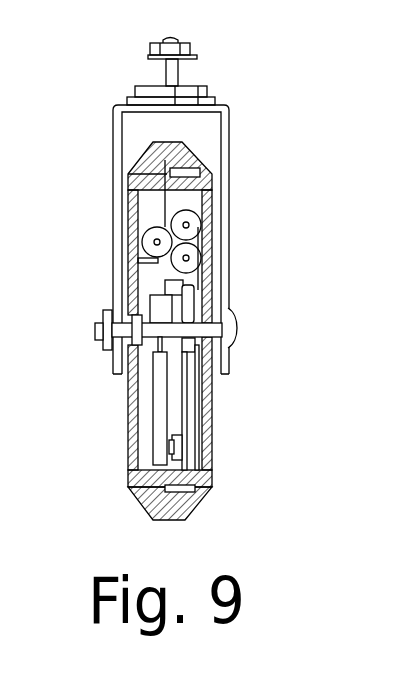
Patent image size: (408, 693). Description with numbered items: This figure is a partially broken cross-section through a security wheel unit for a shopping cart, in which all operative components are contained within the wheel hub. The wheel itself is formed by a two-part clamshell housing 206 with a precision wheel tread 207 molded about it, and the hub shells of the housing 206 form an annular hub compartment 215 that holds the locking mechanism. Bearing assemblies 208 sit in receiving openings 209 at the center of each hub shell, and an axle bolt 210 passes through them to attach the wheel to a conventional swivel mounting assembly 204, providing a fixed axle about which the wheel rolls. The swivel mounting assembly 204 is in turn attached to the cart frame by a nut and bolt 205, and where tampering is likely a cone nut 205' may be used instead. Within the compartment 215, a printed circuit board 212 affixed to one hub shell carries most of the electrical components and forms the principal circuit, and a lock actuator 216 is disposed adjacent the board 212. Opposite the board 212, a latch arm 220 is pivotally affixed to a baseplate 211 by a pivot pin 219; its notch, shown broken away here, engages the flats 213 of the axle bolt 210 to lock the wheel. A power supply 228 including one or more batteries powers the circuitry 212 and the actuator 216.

The swivel mounting assembly 204 is at (222, 190).
The nut and bolt 205 is at (160, 59).
The cone nut 205' is at (201, 25).
The clamshell housing 206 is at (132, 458).
The wheel tread 207 is at (147, 503).
The bearing assemblies 208 is at (122, 302).
The receiving openings 209 is at (123, 352).
The axle bolt 210 is at (236, 342).
The baseplate 211 is at (197, 470).
The printed circuit board 212 is at (153, 425).
The flats 213 is at (195, 300).
The compartment 215 is at (160, 205).
The lock actuator 216 is at (156, 296).
The pivot pin 219 is at (183, 438).
The latch arm 220 is at (187, 392).
The power supply 228 is at (137, 230).